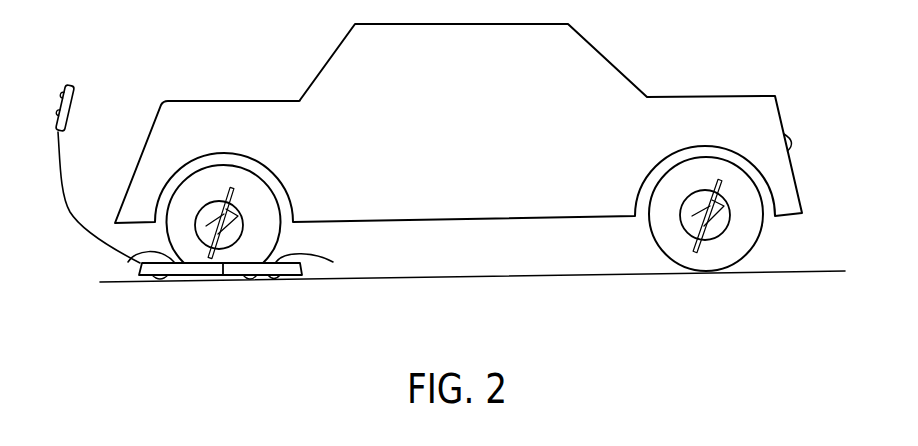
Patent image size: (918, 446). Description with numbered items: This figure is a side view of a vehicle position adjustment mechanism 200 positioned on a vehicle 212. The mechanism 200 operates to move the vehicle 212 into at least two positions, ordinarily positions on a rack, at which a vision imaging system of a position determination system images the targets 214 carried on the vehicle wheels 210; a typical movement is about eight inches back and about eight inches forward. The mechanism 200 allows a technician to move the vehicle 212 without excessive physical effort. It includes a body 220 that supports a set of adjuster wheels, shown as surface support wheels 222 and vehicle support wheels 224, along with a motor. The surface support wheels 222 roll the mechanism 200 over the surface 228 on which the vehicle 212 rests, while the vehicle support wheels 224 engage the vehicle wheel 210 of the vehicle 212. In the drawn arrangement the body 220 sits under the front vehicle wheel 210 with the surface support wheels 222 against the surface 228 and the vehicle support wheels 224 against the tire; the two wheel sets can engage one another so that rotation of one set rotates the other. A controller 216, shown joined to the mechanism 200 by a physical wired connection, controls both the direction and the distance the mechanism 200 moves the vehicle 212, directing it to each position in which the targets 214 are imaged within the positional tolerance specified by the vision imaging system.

The vehicle position adjustment mechanism 200 is at (223, 197).
The vehicle wheel 210 is at (280, 230).
The vehicle 212 is at (710, 97).
The target 214 is at (228, 202).
The controller 216 is at (74, 91).
The body 220 is at (253, 277).
The surface support wheels 222 is at (173, 281).
The vehicle support wheels 224 is at (126, 260).
The surface 228 is at (462, 280).